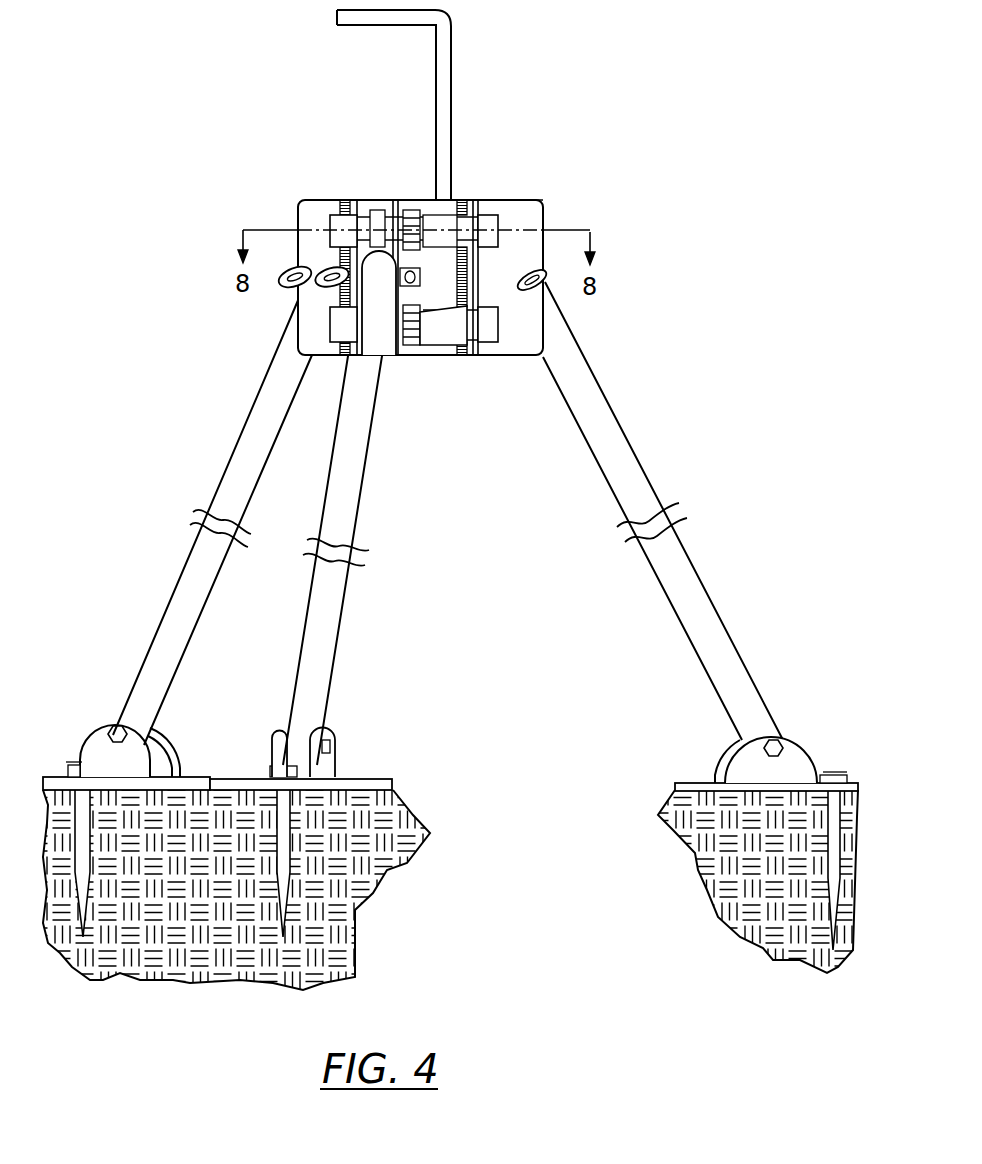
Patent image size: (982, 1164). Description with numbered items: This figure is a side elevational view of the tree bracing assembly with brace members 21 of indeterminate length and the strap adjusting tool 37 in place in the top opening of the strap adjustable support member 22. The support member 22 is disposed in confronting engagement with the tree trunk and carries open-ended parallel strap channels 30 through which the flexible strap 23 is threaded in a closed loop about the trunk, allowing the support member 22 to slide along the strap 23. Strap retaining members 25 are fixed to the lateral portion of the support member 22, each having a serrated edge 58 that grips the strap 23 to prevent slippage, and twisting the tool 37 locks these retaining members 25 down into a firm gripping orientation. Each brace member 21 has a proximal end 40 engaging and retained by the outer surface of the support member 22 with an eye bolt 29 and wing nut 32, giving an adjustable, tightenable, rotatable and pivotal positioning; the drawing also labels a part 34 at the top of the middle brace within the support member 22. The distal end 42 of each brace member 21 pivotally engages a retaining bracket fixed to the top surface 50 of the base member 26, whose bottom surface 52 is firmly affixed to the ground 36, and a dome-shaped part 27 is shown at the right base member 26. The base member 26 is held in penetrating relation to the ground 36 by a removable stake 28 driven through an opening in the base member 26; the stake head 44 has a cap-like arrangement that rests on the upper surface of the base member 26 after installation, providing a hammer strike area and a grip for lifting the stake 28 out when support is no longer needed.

The brace member 21 is at (625, 433).
The support member 22 is at (530, 323).
The flexible strap 23 is at (462, 357).
The strap retaining member 25 is at (413, 338).
The base member 26 is at (850, 790).
The anchor dome 27 is at (780, 733).
The stake 28 is at (840, 833).
The eye bolt 29 is at (287, 287).
The strap channel 30 is at (370, 220).
The wing nut 32 is at (420, 215).
The leg cap 34 is at (363, 250).
The ground 36 is at (407, 865).
The strap adjusting tool 37 is at (452, 100).
The proximal end 40 is at (380, 267).
The distal end of brace member 42 is at (293, 743).
The stake head 44 is at (840, 777).
The top surface 50 is at (365, 778).
The bottom surface 52 is at (357, 800).
The serrated edge 58 is at (423, 213).